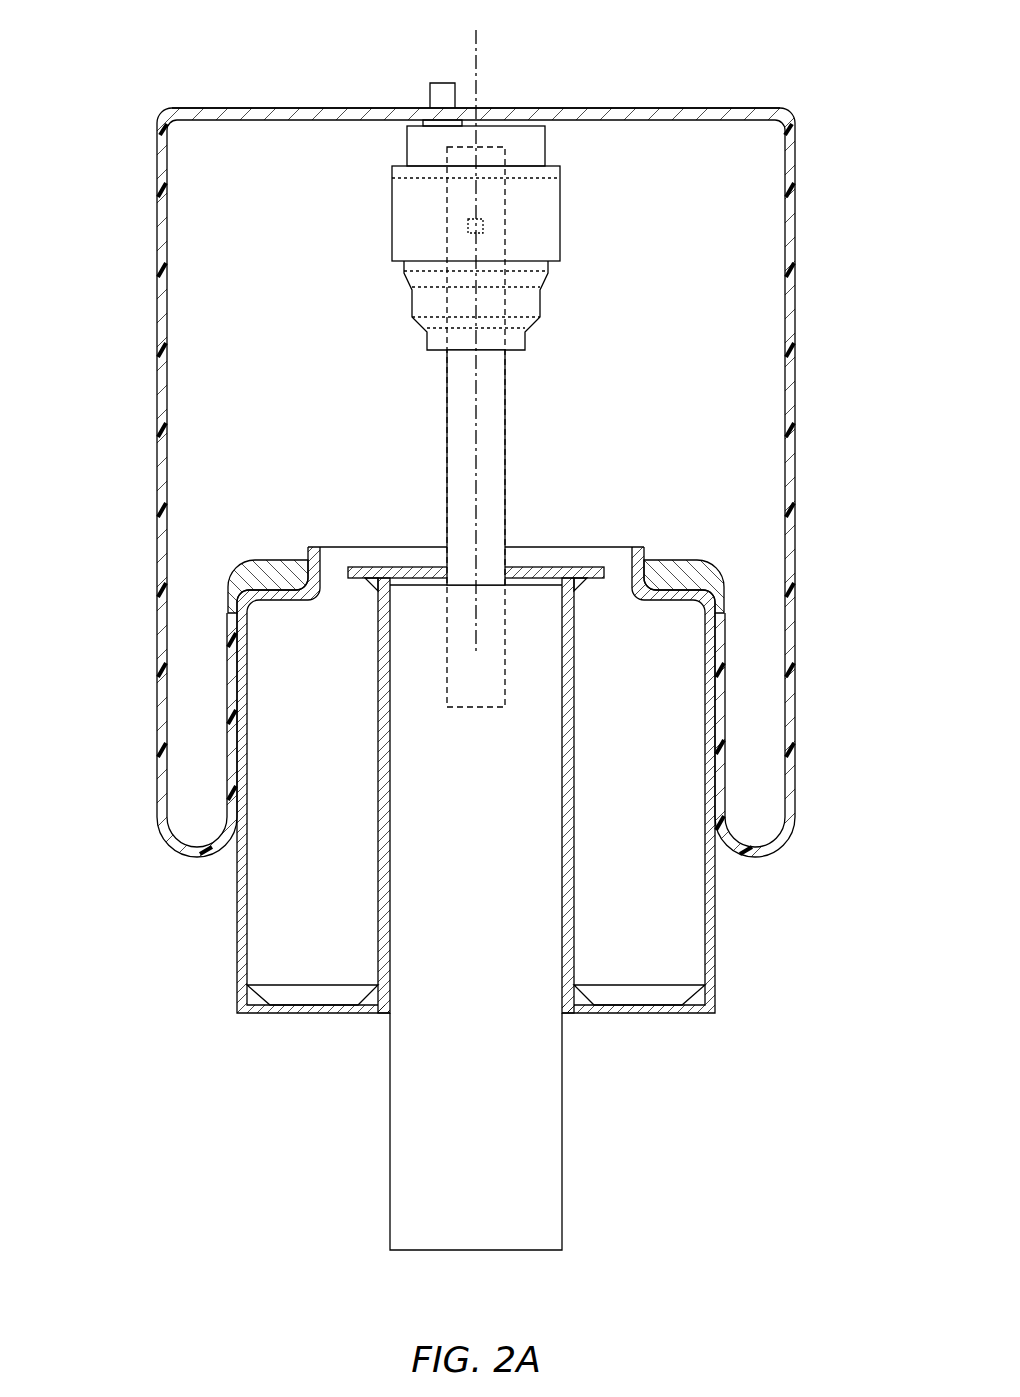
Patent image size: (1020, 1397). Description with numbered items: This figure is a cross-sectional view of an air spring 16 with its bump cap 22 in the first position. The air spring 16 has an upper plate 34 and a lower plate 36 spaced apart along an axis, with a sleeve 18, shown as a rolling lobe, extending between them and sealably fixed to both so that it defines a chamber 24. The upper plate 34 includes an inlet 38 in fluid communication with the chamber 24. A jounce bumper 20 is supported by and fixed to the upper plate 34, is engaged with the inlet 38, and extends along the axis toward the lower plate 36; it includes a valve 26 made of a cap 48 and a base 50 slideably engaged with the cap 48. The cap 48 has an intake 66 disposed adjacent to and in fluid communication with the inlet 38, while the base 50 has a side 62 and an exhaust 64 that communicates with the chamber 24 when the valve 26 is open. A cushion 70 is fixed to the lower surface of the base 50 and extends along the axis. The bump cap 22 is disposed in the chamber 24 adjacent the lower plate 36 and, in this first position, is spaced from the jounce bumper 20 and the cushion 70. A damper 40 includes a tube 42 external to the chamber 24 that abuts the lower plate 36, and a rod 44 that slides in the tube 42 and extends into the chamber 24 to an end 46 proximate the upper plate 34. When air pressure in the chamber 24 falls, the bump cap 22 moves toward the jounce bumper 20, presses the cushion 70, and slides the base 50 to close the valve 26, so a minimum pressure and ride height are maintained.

The air spring 16 is at (103, 87).
The sleeve 18 is at (157, 222).
The jounce bumper 20 is at (459, 383).
The bump cap 22 is at (540, 547).
The chamber 24 is at (192, 326).
The valve 26 is at (482, 213).
The upper plate 34 is at (645, 107).
The lower plate 36 is at (671, 560).
The inlet 38 is at (430, 95).
The damper 40 is at (470, 914).
The tube 42 is at (562, 1135).
The rod 44 is at (508, 425).
The end 46 is at (492, 147).
The cap 48 is at (546, 135).
The base 50 is at (392, 205).
The side 62 is at (407, 243).
The exhaust 64 is at (484, 226).
The intake 66 is at (427, 126).
The cushion 70 is at (530, 330).